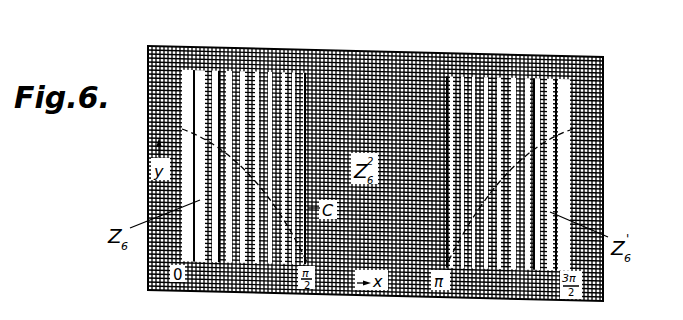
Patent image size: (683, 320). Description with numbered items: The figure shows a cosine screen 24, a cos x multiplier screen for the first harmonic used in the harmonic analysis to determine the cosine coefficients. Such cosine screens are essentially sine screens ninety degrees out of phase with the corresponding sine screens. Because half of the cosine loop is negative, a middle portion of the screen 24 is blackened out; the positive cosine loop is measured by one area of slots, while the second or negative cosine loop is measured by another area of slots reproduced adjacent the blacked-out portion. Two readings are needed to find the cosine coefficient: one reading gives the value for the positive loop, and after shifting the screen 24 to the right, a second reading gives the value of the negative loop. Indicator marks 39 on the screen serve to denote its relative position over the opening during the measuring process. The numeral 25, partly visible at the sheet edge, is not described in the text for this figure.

The cosine screen 24 is at (363, 62).
The indicator marks 39 is at (445, 63).
The adjacent element (cut off) 25 is at (672, 315).